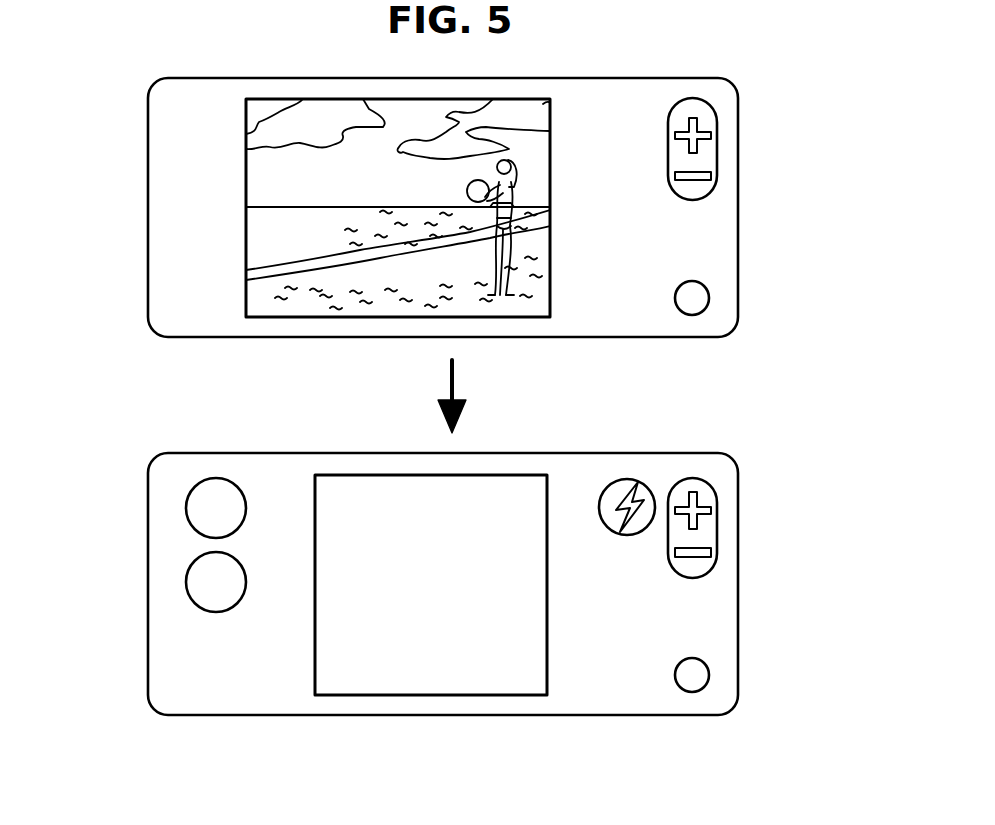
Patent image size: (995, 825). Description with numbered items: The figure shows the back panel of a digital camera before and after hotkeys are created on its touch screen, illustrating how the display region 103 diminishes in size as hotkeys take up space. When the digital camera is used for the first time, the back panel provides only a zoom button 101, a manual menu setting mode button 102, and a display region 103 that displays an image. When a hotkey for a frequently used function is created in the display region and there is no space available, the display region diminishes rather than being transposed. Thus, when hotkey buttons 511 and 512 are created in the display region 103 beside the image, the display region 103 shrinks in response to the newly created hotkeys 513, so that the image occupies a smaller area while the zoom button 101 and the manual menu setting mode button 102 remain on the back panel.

The zoom button 101 is at (698, 466).
The manual menu setting mode button 102 is at (713, 662).
The display region 103 is at (228, 143).
The hotkey button 511 is at (187, 510).
The hotkey button 512 is at (187, 582).
The newly created hotkeys 513 is at (545, 635).